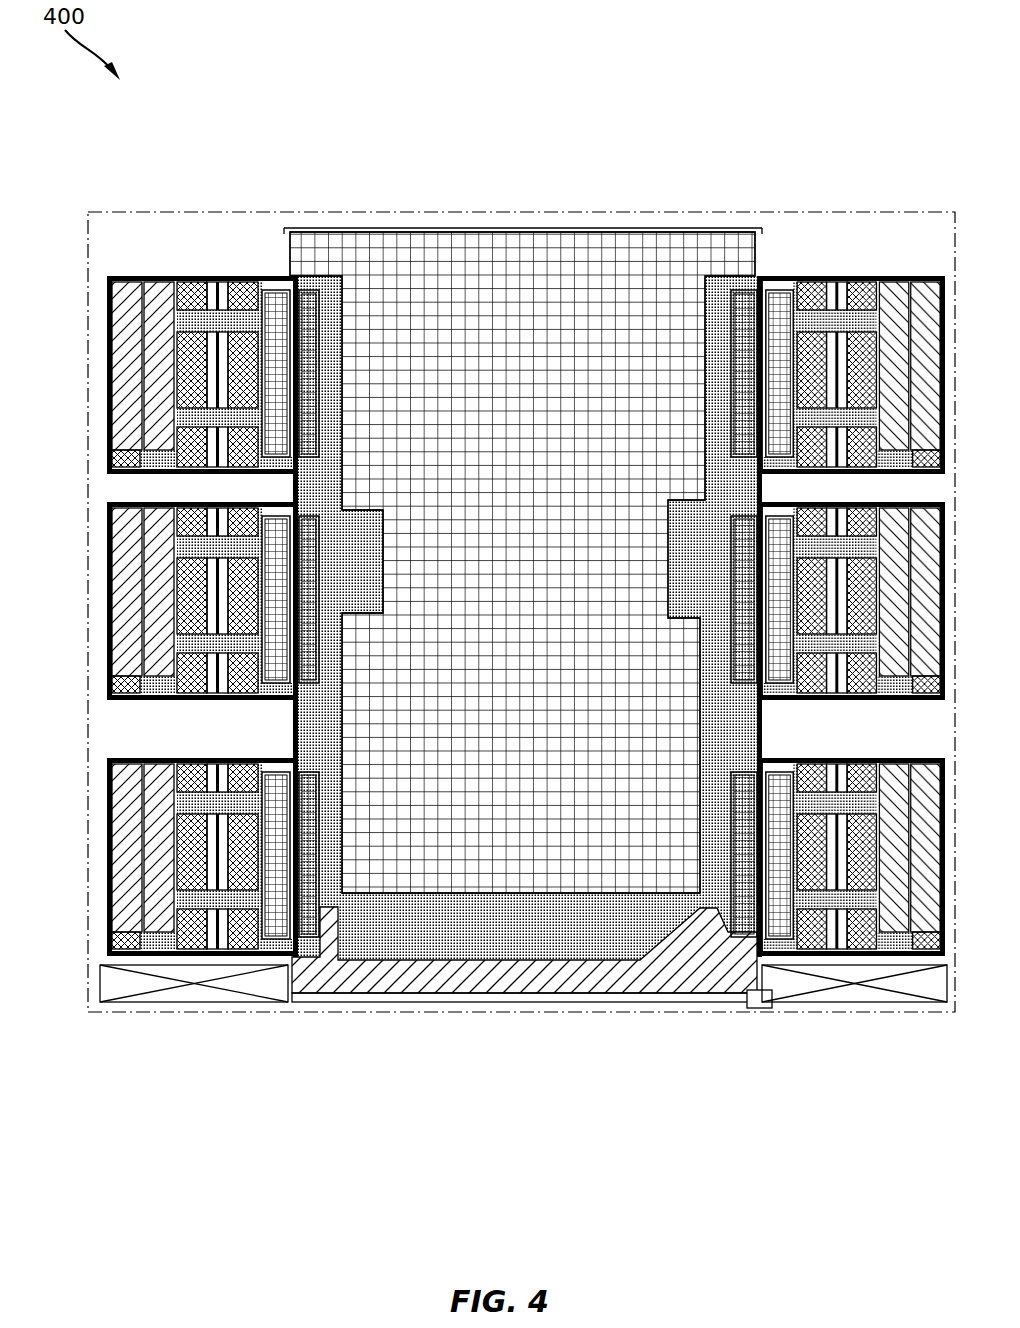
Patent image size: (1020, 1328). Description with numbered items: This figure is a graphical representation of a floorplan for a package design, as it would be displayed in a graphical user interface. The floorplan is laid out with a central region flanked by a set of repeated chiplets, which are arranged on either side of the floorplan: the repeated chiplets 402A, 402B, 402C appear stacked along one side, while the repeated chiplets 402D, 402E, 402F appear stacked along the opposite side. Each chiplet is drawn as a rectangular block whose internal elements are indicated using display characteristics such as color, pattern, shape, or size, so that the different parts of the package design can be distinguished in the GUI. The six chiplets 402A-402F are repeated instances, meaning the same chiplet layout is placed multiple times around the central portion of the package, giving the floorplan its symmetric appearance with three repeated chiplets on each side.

The repeated chiplet 402A is at (190, 276).
The repeated chiplet 402B is at (205, 702).
The repeated chiplet 402C is at (188, 758).
The repeated chiplet 402D is at (885, 276).
The repeated chiplet 402E is at (858, 702).
The repeated chiplet 402F is at (840, 758).